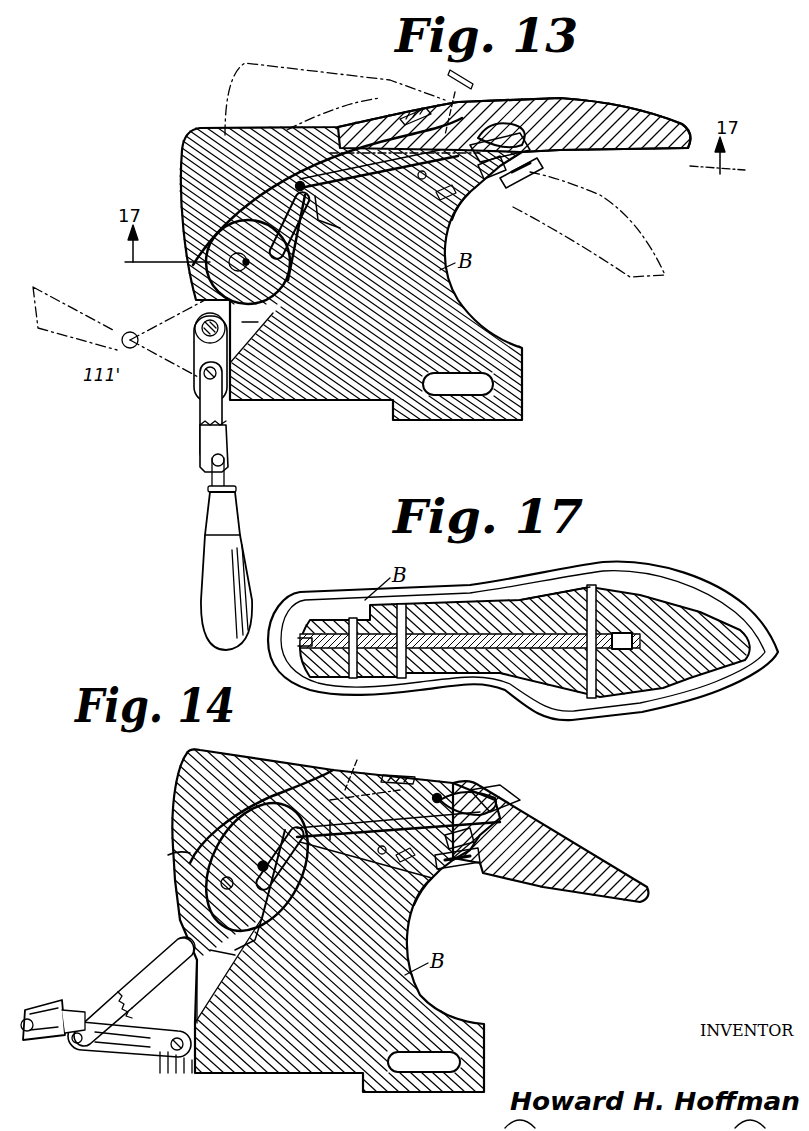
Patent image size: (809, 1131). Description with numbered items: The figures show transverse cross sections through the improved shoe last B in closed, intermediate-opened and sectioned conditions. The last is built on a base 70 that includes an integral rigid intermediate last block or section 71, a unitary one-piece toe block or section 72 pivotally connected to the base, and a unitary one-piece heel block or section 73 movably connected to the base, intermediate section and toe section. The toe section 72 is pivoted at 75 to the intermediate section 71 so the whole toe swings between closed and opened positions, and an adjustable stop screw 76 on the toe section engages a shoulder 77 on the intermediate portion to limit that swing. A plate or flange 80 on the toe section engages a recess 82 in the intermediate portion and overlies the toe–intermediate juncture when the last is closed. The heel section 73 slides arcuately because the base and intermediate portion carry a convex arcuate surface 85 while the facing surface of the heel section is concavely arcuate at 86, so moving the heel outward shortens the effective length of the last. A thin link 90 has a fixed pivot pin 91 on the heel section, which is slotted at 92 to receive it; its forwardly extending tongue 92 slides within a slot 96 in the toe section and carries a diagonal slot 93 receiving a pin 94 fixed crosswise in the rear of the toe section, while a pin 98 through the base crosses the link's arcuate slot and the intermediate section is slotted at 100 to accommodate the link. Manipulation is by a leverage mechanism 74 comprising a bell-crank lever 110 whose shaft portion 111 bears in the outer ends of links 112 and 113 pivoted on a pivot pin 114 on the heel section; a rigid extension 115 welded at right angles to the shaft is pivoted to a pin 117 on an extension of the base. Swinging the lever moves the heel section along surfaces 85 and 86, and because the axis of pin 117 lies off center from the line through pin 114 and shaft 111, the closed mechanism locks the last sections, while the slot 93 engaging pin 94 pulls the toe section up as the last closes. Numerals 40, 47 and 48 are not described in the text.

In FIG. 13, the connecting rod 40 is at (365, 185).
In FIG. 14, the connecting rod 40 is at (398, 833).
In FIG. 13, the stop 47 is at (333, 229).
In FIG. 14, the stop 47 is at (270, 922).
In FIG. 13, the arm 48 is at (325, 222).
In FIG. 14, the arm 48 is at (273, 874).
In FIG. 13, the base 70 is at (348, 383).
In FIG. 14, the base 70 is at (297, 1063).
In FIG. 13, the intermediate last block or section 71 is at (428, 84).
In FIG. 14, the intermediate last block or section 71 is at (355, 770).
In FIG. 13, the toe block or section 72 is at (630, 124).
In FIG. 14, the toe block or section 72 is at (580, 856).
In FIG. 13, the heel block or section 73 is at (188, 162).
In FIG. 17, the heel block or section 73 is at (308, 676).
In FIG. 14, the heel block or section 73 is at (188, 786).
In FIG. 13, the leverage mechanism 74 is at (196, 444).
In FIG. 14, the leverage mechanism 74 is at (112, 982).
In FIG. 13, the pivot 75 is at (490, 180).
In FIG. 14, the pivot 75 is at (473, 838).
In FIG. 13, the adjustable stop screw 76 is at (505, 190).
In FIG. 14, the adjustable stop screw 76 is at (455, 872).
In FIG. 13, the shoulder 77 is at (466, 200).
In FIG. 14, the shoulder 77 is at (430, 888).
In FIG. 13, the plate or flange 80 is at (414, 110).
In FIG. 14, the plate or flange 80 is at (400, 776).
In FIG. 14, the recess 82 is at (390, 792).
In FIG. 13, the convex arcuate surface 85 is at (258, 322).
In FIG. 14, the convex arcuate surface 85 is at (203, 958).
In FIG. 13, the concavely arcuate surface 86 is at (225, 316).
In FIG. 14, the concavely arcuate surface 86 is at (205, 1000).
In FIG. 17, the link 90 is at (465, 634).
In FIG. 13, the pivot pin 91 is at (288, 262).
In FIG. 17, the pivot pin 91 is at (352, 680).
In FIG. 14, the pivot pin 91 is at (220, 884).
In FIG. 13, the slot / forwardly extending tongue 92 is at (300, 186).
In FIG. 17, the slot / forwardly extending tongue 92 is at (308, 640).
In FIG. 14, the slot / forwardly extending tongue 92 is at (440, 790).
In FIG. 13, the diagonal slot 93 is at (498, 125).
In FIG. 14, the diagonal slot 93 is at (478, 796).
In FIG. 13, the pin 94 is at (518, 130).
In FIG. 17, the pin 94 is at (602, 586).
In FIG. 14, the pin 94 is at (462, 792).
In FIG. 17, the slot 96 is at (628, 636).
In FIG. 14, the slot 96 is at (520, 832).
In FIG. 13, the pin 98 is at (289, 225).
In FIG. 17, the pin 98 is at (405, 606).
In FIG. 14, the pin 98 is at (280, 862).
In FIG. 13, the slot 100 is at (420, 181).
In FIG. 17, the slot 100 is at (530, 598).
In FIG. 14, the slot 100 is at (384, 856).
In FIG. 13, the bell-crank lever 110 is at (204, 572).
In FIG. 14, the bell-crank lever 110 is at (45, 1015).
In FIG. 13, the shaft portion 111 is at (224, 462).
In FIG. 14, the shaft portion 111 is at (75, 1046).
In FIG. 13, the link 112 is at (196, 345).
In FIG. 14, the link 112 is at (150, 972).
In FIG. 13, the link 113 is at (226, 444).
In FIG. 14, the link 113 is at (108, 1010).
In FIG. 13, the pivot pin 114 is at (195, 320).
In FIG. 14, the pivot pin 114 is at (176, 944).
In FIG. 13, the rigid extension 115 is at (200, 412).
In FIG. 14, the rigid extension 115 is at (405, 864).
In FIG. 13, the pin 117 is at (190, 383).
In FIG. 14, the pin 117 is at (172, 1052).